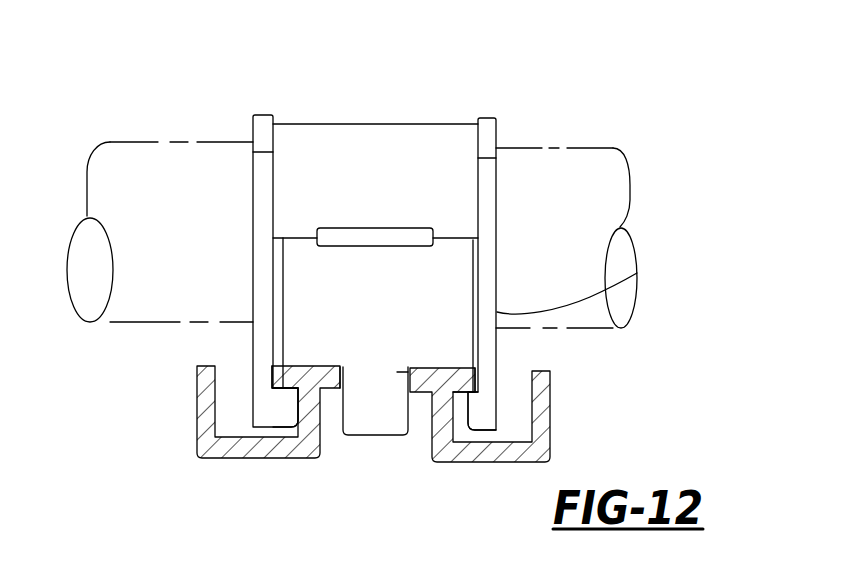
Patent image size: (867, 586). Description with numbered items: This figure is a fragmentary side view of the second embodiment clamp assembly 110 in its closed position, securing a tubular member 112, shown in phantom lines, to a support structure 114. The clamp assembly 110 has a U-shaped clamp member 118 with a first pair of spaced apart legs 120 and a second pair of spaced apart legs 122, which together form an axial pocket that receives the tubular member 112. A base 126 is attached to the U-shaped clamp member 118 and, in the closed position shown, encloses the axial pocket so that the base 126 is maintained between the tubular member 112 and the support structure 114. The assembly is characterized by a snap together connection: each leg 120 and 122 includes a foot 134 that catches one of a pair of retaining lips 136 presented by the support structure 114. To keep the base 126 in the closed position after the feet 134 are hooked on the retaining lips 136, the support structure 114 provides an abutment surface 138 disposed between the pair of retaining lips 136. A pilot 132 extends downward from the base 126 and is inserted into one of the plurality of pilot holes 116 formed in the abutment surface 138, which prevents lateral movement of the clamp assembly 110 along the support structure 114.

The clamp assembly 110 is at (452, 98).
The tubular member 112 is at (597, 147).
The support structure 114 is at (570, 427).
The pilot holes 116 is at (397, 372).
The U-shaped clamp member 118 is at (385, 187).
The first pair of spaced apart legs 120 is at (637, 273).
The second pair of spaced apart legs 122 is at (253, 302).
The base 126 is at (378, 284).
The pilot 132 is at (370, 436).
The foot 134 is at (280, 393).
The retaining lips 136 is at (278, 388).
The abutment surface 138 is at (300, 367).